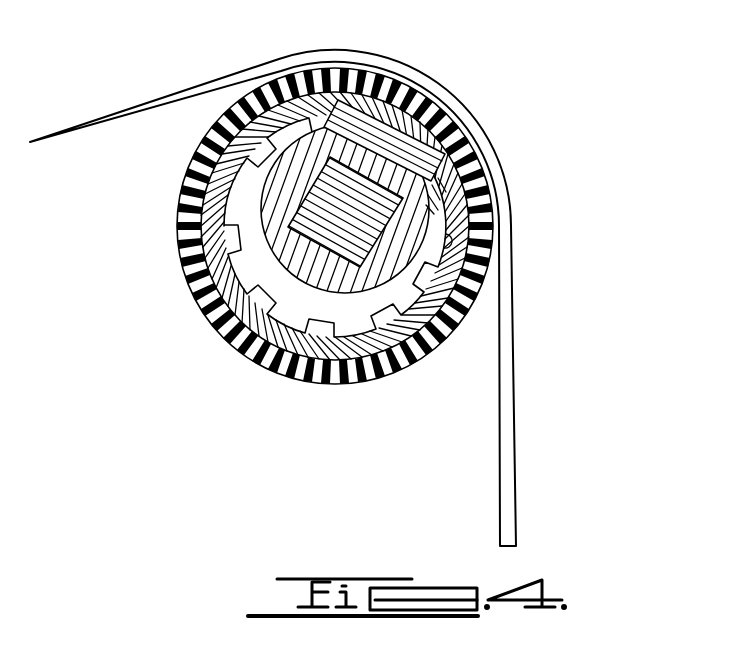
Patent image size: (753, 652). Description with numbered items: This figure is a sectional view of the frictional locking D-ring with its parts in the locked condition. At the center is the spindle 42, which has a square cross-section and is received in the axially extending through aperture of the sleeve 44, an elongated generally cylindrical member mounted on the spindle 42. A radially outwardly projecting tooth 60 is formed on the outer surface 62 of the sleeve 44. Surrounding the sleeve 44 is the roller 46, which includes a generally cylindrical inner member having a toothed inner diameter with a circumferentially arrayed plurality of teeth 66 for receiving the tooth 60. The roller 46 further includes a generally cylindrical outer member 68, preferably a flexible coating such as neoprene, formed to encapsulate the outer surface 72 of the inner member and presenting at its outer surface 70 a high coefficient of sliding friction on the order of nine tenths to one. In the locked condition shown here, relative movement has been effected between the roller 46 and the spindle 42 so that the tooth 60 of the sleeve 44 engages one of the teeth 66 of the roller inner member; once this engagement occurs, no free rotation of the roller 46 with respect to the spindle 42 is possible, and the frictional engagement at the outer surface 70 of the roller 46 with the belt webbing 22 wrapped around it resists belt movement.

The strip 22 is at (408, 73).
The spindle 42 is at (383, 214).
The sleeve 44 is at (275, 232).
The roller 46 is at (366, 350).
The tooth 60 is at (400, 140).
The outer surface 62 is at (440, 178).
The teeth 66 is at (447, 243).
The outer member 68 is at (293, 372).
The outer surface 70 is at (230, 342).
The outer surface 72 is at (222, 295).